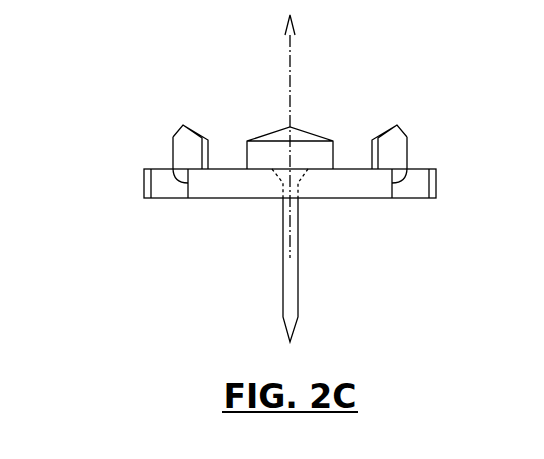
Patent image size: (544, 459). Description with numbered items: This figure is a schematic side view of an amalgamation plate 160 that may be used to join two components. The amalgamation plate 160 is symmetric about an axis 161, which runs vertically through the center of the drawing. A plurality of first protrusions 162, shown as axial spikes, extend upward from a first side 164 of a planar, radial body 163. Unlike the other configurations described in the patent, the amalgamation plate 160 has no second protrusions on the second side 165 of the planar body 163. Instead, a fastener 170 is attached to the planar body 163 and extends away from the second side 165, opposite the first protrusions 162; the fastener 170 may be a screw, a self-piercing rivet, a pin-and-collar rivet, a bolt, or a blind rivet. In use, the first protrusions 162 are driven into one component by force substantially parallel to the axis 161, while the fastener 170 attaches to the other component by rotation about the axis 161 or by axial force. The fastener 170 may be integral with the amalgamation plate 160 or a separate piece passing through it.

The amalgamation plate 160 is at (442, 66).
The axis 161 is at (288, 62).
The first protrusions 162 is at (180, 148).
The planar body 163 is at (225, 177).
The first side 164 is at (423, 123).
The second side 165 is at (400, 228).
The fastener 170 is at (288, 278).